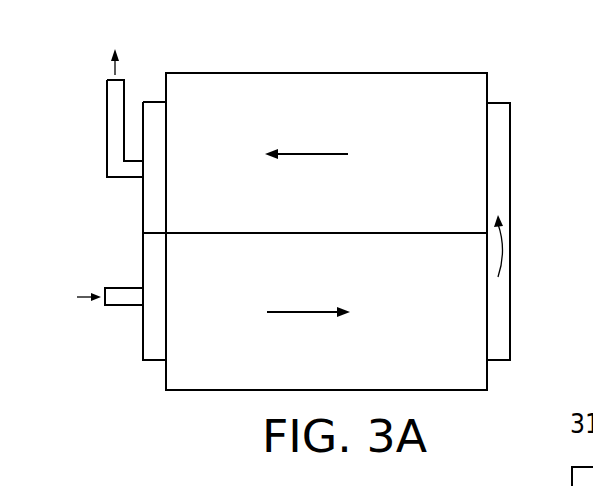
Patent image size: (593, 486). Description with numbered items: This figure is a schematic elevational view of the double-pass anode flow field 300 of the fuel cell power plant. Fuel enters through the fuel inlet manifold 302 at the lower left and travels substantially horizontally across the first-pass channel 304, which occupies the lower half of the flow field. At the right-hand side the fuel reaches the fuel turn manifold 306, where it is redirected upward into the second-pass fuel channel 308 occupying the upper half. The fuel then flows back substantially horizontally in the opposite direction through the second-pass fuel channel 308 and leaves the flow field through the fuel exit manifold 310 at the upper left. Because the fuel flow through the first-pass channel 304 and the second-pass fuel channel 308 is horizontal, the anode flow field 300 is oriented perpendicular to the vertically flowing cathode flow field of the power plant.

The double-pass anode flow field 300 is at (384, 56).
The fuel inlet manifold 302 is at (152, 337).
The first-pass channel 304 is at (252, 370).
The fuel turn manifold 306 is at (497, 183).
The second-pass fuel channel 308 is at (265, 90).
The fuel exit manifold 310 is at (152, 207).